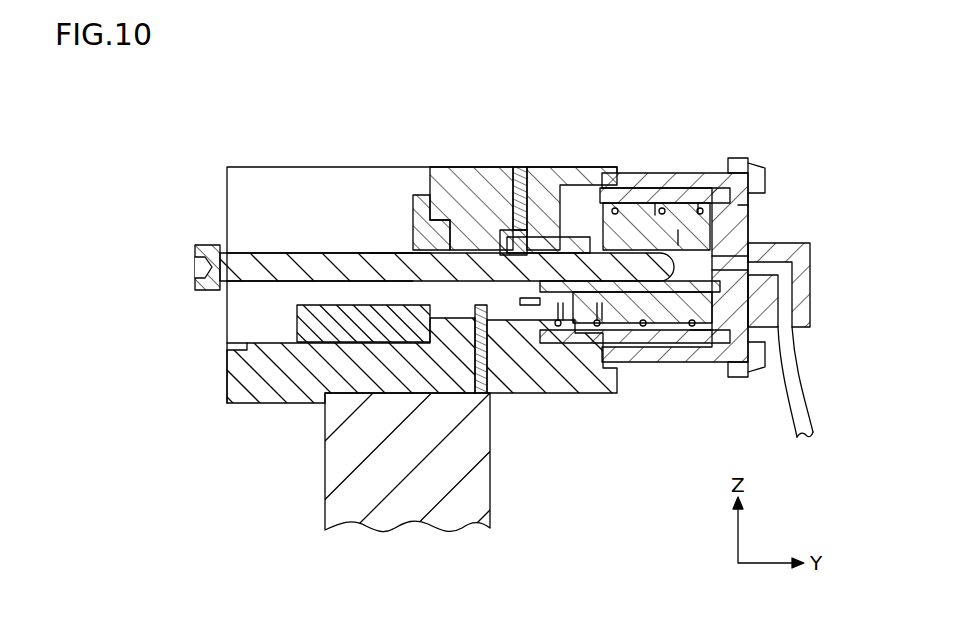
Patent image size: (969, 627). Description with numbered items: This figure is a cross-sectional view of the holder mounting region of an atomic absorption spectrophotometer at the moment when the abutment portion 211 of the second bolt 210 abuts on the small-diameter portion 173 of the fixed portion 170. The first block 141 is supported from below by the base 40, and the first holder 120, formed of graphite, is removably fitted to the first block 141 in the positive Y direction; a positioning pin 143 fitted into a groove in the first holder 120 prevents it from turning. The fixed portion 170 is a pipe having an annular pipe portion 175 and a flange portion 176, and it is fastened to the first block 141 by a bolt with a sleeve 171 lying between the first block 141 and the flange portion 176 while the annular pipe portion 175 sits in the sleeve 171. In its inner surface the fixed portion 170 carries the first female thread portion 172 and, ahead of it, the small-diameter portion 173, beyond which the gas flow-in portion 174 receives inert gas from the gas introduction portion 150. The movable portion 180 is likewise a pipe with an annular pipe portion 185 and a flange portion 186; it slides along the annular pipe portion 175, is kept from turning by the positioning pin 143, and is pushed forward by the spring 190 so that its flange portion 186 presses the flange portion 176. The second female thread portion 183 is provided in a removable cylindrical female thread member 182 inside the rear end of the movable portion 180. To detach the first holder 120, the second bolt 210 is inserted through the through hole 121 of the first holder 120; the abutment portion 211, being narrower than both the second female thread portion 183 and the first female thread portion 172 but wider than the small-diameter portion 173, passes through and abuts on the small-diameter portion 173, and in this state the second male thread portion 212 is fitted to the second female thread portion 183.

The base 40 is at (345, 462).
The first holder 120 is at (310, 323).
The through hole 121 is at (470, 262).
The first block 141 is at (590, 387).
The positioning pin 143 is at (517, 167).
The gas introduction portion 150 is at (802, 267).
The fixed portion 170 is at (730, 215).
The sleeve 171 is at (700, 343).
The first female thread portion 172 is at (600, 265).
The small-diameter portion 173 is at (690, 275).
The gas flow-in portion 174 is at (723, 266).
The annular pipe portion 175 is at (683, 238).
The flange portion 176 is at (752, 212).
The movable portion 180 is at (637, 310).
The female thread member 182 is at (523, 303).
The second female thread portion 183 is at (513, 262).
The annular pipe portion 185 is at (660, 205).
The flange portion 186 is at (704, 201).
The spring 190 is at (565, 212).
The second bolt 210 is at (306, 268).
The abutment portion 211 is at (632, 245).
The second male thread portion 212 is at (372, 250).